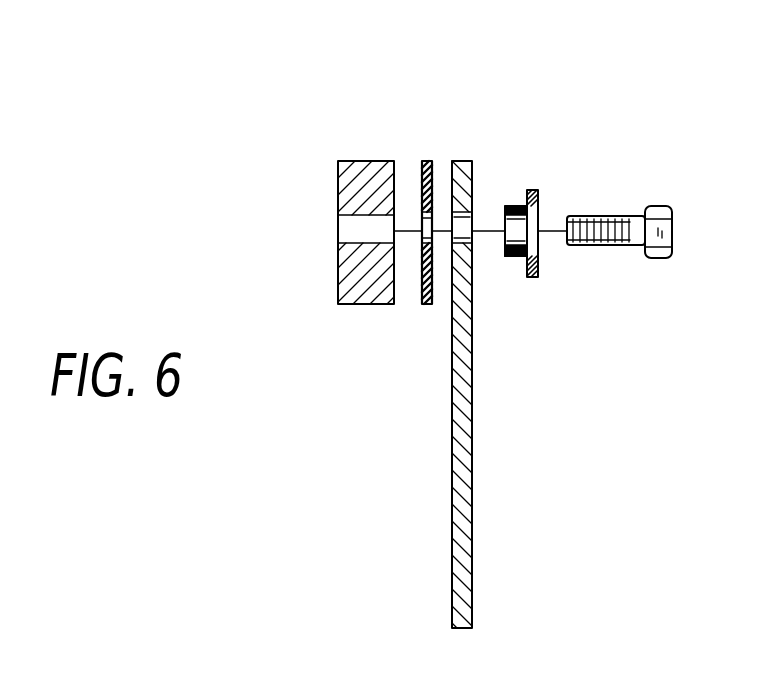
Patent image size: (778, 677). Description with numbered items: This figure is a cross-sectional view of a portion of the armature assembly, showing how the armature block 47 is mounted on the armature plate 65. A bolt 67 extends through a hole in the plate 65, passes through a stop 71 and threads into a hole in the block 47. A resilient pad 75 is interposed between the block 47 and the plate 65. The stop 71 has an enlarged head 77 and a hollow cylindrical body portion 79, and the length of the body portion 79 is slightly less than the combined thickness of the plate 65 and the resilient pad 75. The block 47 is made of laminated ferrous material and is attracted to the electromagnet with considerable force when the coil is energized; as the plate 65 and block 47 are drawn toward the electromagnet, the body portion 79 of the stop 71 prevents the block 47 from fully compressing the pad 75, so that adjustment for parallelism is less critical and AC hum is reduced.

The armature block 47 is at (357, 162).
The resilient pad 75 is at (431, 160).
The stop 71 is at (504, 128).
The enlarged head 77 is at (534, 190).
The hollow cylindrical body portion 79 is at (503, 257).
The bolt 67 is at (636, 214).
The armature plate 65 is at (472, 410).